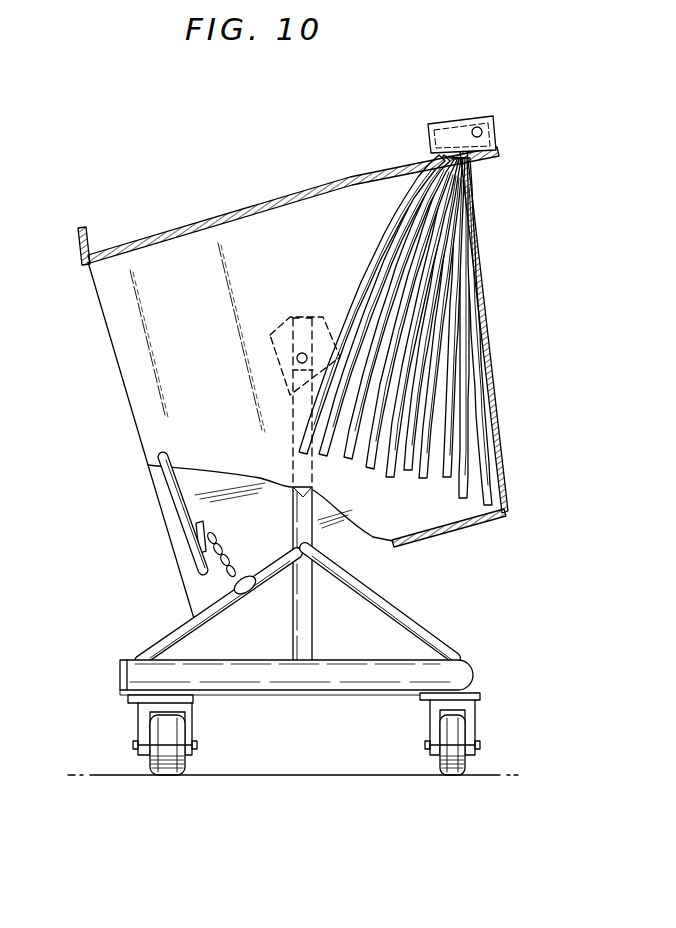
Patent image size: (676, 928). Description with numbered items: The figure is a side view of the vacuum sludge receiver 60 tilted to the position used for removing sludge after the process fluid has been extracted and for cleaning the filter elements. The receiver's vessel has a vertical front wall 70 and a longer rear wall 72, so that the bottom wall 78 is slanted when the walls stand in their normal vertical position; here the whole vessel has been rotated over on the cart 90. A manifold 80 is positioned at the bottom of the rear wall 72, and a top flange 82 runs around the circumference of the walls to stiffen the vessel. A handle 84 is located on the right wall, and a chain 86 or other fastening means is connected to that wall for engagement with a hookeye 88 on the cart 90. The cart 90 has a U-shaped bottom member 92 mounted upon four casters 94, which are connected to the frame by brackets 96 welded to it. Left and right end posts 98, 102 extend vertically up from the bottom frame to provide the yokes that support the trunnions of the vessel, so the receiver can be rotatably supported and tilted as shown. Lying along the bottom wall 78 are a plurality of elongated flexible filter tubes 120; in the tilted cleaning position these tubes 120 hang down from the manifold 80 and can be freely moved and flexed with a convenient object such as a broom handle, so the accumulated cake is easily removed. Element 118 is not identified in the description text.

The vacuum sludge receiver 60 is at (222, 203).
The front wall 70 is at (442, 537).
The rear wall 72 is at (340, 181).
The bottom wall 78 is at (490, 356).
The manifold 80 is at (477, 121).
The top flange 82 is at (80, 251).
The handle 84 is at (172, 533).
The chain 86 is at (224, 545).
The hookeye 88 is at (238, 604).
The cart 90 is at (480, 650).
The U-shaped bottom member 92 is at (278, 690).
The casters 94 is at (135, 745).
The brackets 96 is at (130, 698).
The left end post 98 is at (290, 444).
The right end post 102 is at (309, 620).
The pivot bracket 118 is at (296, 357).
The elongated flexible filter tubes 120 is at (397, 290).